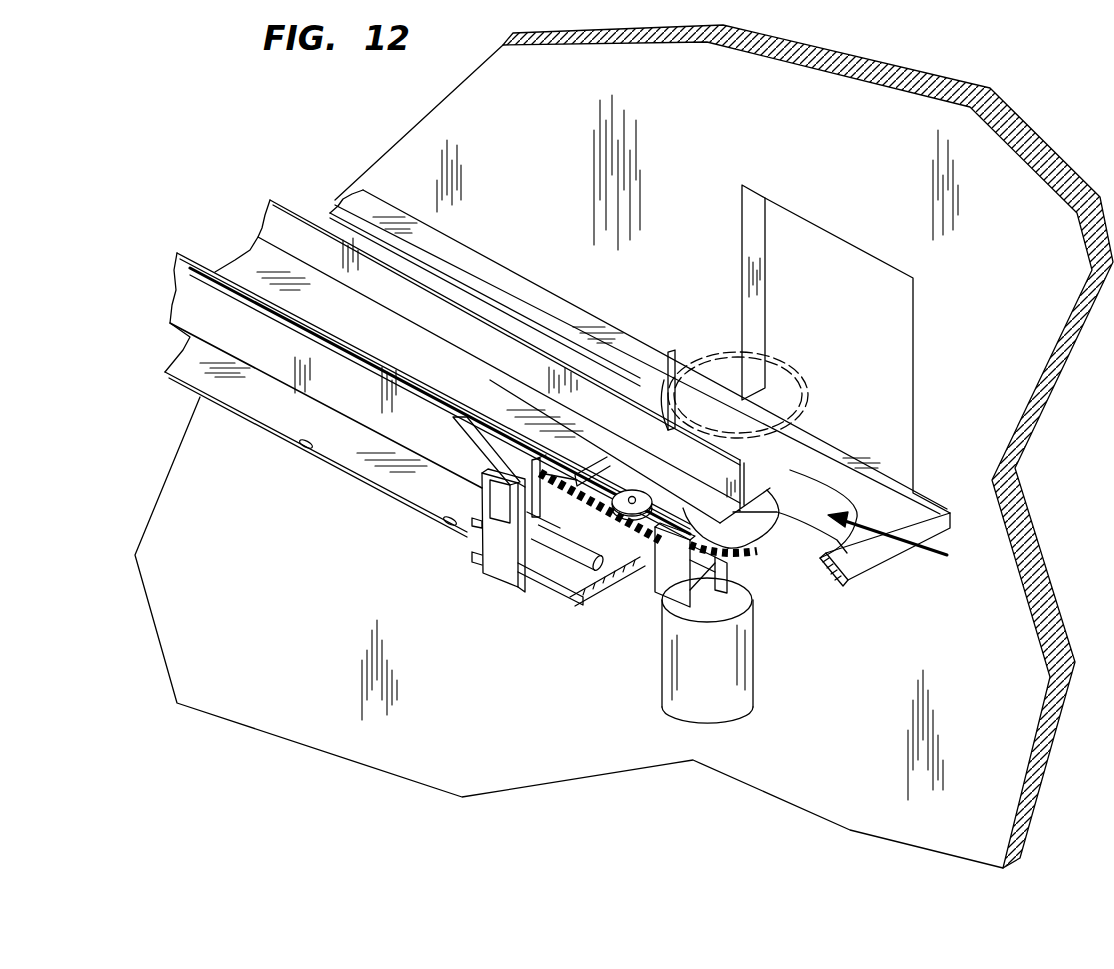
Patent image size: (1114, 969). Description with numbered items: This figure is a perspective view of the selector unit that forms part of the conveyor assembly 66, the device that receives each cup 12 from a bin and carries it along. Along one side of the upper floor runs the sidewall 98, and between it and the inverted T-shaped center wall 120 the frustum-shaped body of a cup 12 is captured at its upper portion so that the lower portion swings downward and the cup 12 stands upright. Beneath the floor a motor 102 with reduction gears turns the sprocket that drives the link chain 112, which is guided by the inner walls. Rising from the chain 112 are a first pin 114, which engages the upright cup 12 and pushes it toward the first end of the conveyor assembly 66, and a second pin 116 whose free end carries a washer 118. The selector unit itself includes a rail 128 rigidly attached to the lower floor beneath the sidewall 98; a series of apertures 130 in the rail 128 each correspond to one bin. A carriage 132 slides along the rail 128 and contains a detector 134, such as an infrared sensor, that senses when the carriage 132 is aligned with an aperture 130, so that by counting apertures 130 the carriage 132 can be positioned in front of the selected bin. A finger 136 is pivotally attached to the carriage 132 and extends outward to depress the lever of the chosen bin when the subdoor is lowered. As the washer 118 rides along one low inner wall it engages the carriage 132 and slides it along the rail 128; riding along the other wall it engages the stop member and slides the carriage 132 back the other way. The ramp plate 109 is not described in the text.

The cup 12 is at (808, 397).
The conveyor assembly 66 is at (904, 542).
The sidewall 98 is at (190, 288).
The motor 102 is at (737, 657).
The ramp plate 109 is at (870, 561).
The link chain 112 is at (762, 550).
The first pin 114 is at (672, 367).
The second pin 116 is at (590, 540).
The washer 118 is at (607, 525).
The center wall 120 is at (278, 230).
The rail 128 is at (275, 424).
The aperture 130 is at (307, 443).
The carriage 132 is at (505, 580).
The detector 134 is at (492, 563).
The finger 136 is at (477, 450).